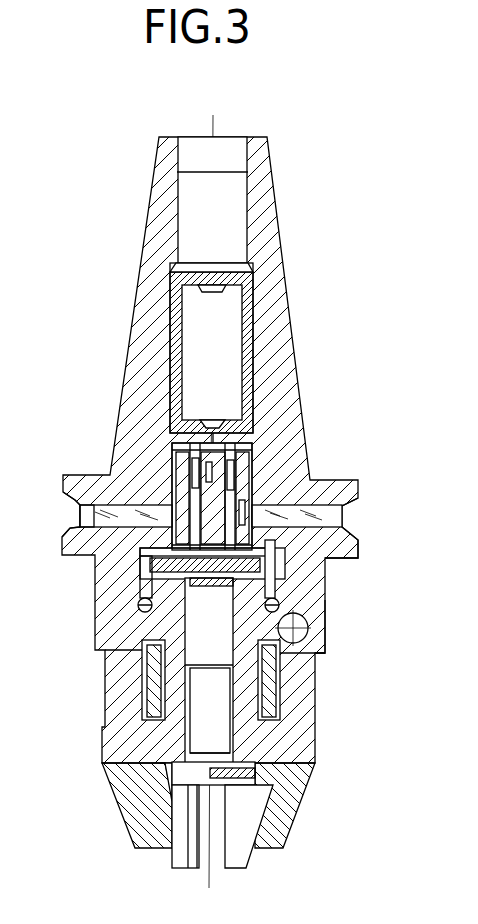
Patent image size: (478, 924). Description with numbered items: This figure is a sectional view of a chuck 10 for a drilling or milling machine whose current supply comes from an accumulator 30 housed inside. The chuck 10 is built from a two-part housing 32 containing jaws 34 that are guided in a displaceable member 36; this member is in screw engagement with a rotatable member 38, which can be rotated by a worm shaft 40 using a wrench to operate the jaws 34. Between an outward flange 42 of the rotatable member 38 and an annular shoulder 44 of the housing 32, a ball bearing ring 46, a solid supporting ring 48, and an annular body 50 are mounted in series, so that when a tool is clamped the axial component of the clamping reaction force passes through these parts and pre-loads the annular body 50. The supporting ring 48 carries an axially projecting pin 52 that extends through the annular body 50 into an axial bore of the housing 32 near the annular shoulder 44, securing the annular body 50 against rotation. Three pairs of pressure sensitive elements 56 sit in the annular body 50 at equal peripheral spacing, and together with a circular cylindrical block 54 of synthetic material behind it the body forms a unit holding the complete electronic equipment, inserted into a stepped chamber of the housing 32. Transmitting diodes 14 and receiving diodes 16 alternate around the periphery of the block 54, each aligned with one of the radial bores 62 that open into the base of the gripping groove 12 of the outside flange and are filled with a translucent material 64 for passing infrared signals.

The chuck 10 is at (326, 400).
The gripping groove 12 is at (348, 510).
The transmitting diodes 14 is at (254, 494).
The receiving diodes 16 is at (165, 495).
The accumulator 30 is at (232, 337).
The two-part housing 32 is at (321, 615).
The jaws 34 is at (255, 805).
The displaceable member 36 is at (175, 772).
The rotatable member 38 is at (170, 705).
The worm shaft 40 is at (312, 637).
The outward flange 42 is at (98, 640).
The annular shoulder 44 is at (82, 522).
The ball bearing ring 46 is at (100, 618).
The solid supporting ring 48 is at (100, 595).
The annular body 50 is at (98, 570).
The axially projecting pin 52 is at (287, 576).
The circular cylindrical block 54 is at (248, 492).
The pressure sensitive elements 56 is at (82, 545).
The radial bores 62 is at (105, 495).
The translucent material 64 is at (325, 556).